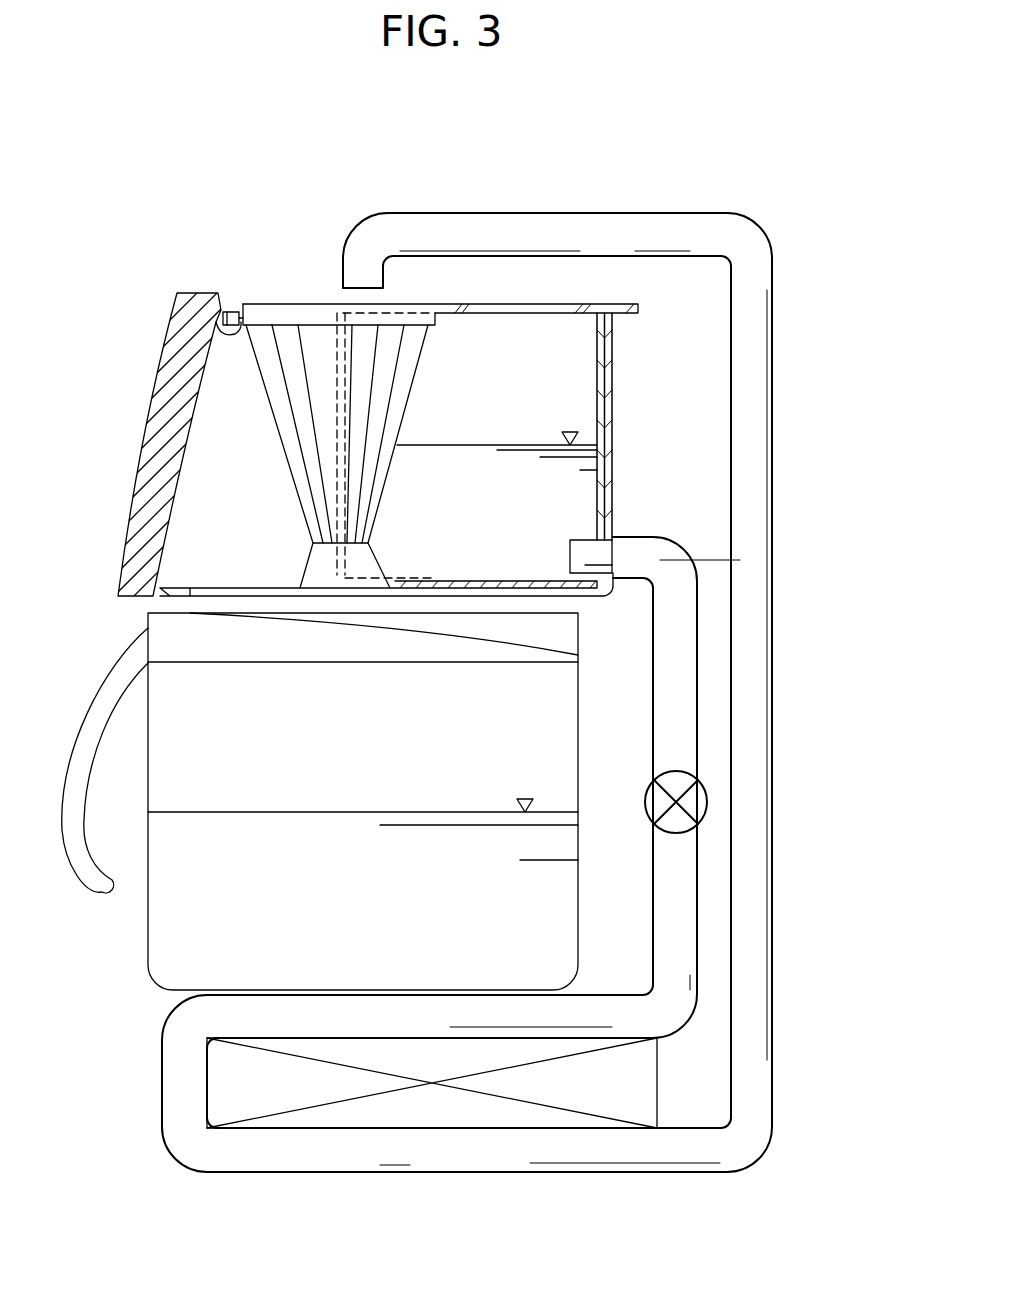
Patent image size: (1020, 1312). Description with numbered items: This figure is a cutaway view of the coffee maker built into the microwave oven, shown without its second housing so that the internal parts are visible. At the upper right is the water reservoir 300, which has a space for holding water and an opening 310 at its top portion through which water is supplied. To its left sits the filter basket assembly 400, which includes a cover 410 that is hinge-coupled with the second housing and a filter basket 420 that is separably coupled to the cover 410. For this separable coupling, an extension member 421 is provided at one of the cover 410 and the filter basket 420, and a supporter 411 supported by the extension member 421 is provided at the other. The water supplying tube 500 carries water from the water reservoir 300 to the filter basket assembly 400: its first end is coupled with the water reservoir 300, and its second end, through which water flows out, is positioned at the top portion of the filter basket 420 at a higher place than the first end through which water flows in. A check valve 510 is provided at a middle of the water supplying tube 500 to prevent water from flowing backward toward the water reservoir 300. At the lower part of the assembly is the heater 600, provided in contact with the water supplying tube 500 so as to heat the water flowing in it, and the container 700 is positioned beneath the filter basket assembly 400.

The water reservoir 300 is at (600, 300).
The opening 310 is at (518, 304).
The filter basket assembly 400 is at (190, 214).
The cover 410 is at (140, 444).
The supporter 411 is at (232, 334).
The filter basket 420 is at (298, 300).
The extension member 421 is at (228, 307).
The water supplying tube 500 is at (760, 274).
The check valve 510 is at (700, 802).
The heater 600 is at (445, 1108).
The container 700 is at (146, 948).